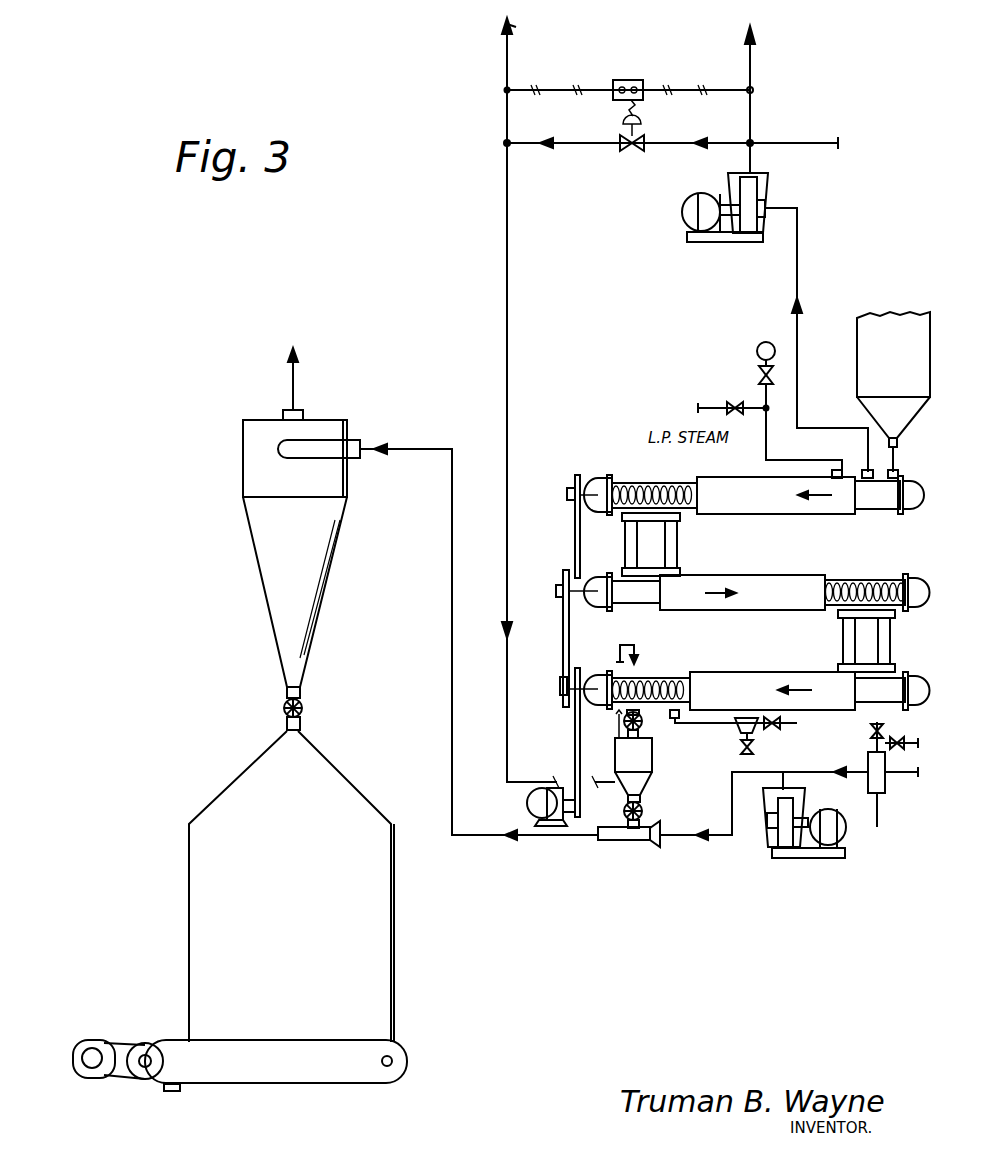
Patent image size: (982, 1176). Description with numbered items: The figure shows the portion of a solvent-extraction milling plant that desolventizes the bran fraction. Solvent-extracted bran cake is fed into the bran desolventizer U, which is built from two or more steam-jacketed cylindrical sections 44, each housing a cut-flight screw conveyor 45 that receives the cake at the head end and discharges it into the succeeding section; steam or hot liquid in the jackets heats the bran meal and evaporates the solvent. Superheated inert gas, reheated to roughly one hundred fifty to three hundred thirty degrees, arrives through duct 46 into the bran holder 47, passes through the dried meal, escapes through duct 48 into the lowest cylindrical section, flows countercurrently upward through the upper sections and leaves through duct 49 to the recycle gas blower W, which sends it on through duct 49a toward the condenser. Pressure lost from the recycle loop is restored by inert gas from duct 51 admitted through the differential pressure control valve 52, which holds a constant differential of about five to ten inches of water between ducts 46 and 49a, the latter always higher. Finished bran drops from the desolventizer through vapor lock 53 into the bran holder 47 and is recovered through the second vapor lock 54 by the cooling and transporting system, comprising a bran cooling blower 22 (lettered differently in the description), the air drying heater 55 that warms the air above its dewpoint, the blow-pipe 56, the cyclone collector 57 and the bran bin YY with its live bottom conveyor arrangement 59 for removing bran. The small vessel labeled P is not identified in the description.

The blower pump 22 is at (763, 841).
The steam-jacketed cylindrical section 44 is at (745, 678).
The cut-flight screw conveyor 45 is at (842, 577).
The duct 46 is at (508, 280).
The bran holder 47 is at (652, 760).
The duct 48 is at (640, 645).
The duct 49 is at (797, 278).
The duct 49a is at (752, 68).
The duct 51 is at (792, 143).
The differential pressure control valve 52 is at (628, 150).
The vapor lock 53 is at (643, 720).
The second vapor lock 54 is at (642, 810).
The air drying heater 55 is at (866, 762).
The blow-pipe 56 is at (614, 842).
The cyclone collector 57 is at (290, 592).
The live bottom conveyor arrangement 59 is at (289, 1062).
The recycle gas blower W is at (770, 192).
The feed hopper P is at (898, 369).
The bran desolventizer U is at (604, 466).
The bran bin YY is at (296, 914).